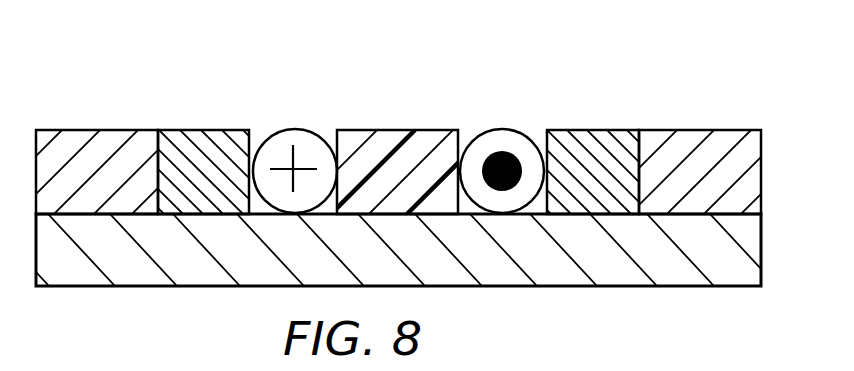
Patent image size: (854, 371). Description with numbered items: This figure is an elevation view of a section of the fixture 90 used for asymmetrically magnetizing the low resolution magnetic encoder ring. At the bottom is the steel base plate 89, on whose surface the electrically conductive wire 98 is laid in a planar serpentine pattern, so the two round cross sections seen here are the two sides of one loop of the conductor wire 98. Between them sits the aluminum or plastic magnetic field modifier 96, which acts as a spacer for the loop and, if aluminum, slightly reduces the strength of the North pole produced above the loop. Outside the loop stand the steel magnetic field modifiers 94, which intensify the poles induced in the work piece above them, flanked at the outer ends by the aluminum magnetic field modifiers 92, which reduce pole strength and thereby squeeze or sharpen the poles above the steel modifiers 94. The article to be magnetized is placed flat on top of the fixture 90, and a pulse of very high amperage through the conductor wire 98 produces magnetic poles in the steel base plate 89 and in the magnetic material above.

The steel base plate 89 is at (693, 269).
The fixture 90 is at (643, 88).
The aluminum magnetic field modifier 92 is at (110, 143).
The steel magnetic field modifier 94 is at (202, 138).
The magnetic field modifier 96 is at (403, 130).
The conductor wire 98 is at (302, 138).